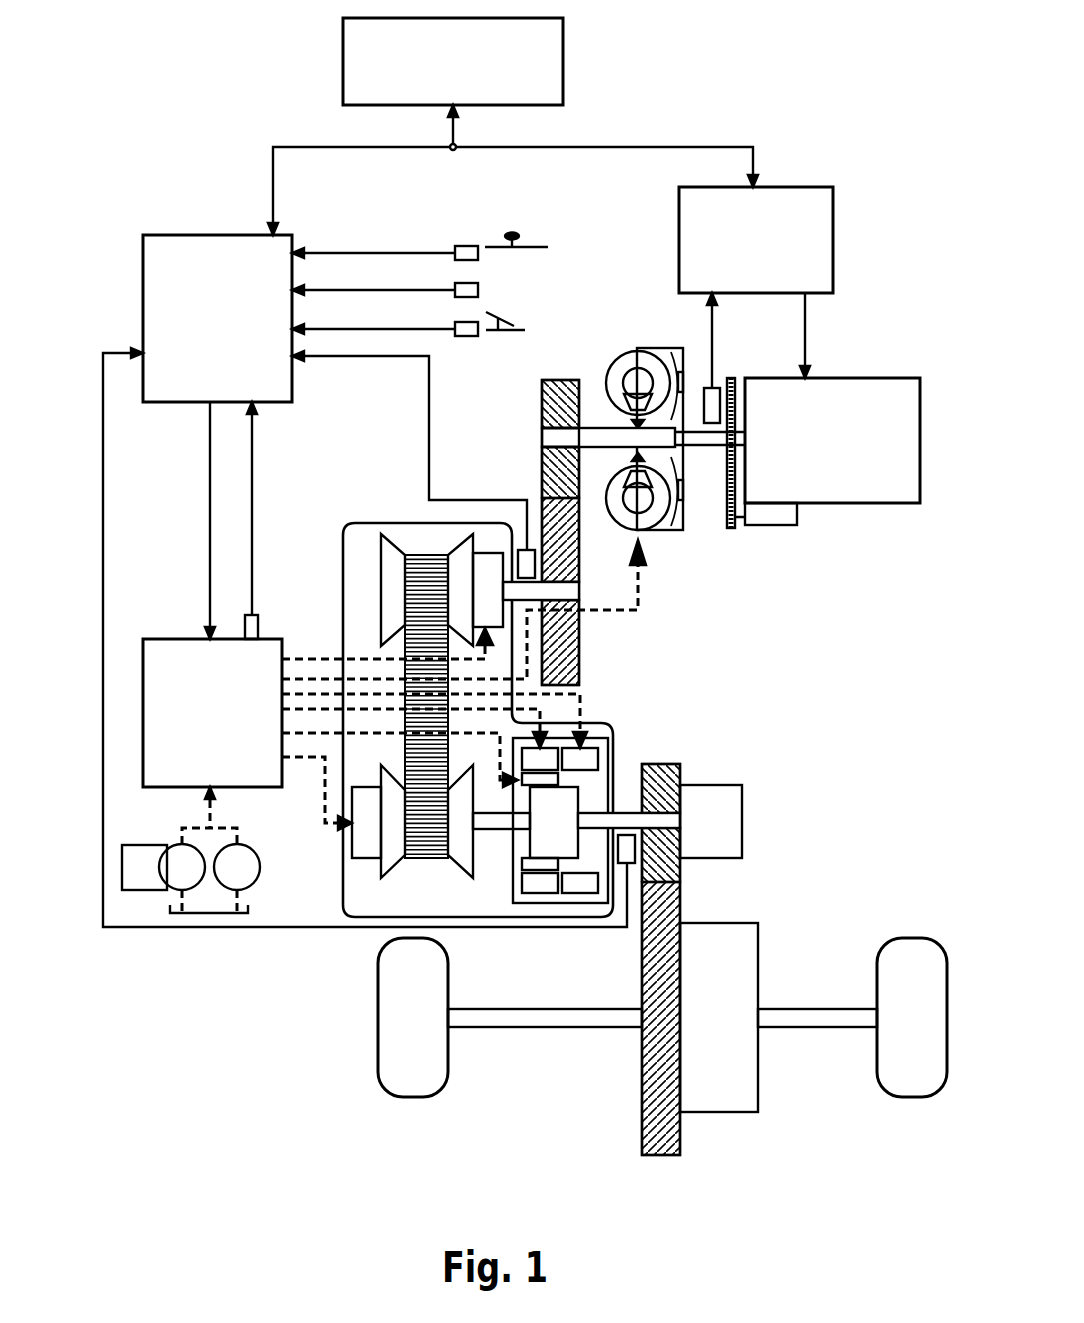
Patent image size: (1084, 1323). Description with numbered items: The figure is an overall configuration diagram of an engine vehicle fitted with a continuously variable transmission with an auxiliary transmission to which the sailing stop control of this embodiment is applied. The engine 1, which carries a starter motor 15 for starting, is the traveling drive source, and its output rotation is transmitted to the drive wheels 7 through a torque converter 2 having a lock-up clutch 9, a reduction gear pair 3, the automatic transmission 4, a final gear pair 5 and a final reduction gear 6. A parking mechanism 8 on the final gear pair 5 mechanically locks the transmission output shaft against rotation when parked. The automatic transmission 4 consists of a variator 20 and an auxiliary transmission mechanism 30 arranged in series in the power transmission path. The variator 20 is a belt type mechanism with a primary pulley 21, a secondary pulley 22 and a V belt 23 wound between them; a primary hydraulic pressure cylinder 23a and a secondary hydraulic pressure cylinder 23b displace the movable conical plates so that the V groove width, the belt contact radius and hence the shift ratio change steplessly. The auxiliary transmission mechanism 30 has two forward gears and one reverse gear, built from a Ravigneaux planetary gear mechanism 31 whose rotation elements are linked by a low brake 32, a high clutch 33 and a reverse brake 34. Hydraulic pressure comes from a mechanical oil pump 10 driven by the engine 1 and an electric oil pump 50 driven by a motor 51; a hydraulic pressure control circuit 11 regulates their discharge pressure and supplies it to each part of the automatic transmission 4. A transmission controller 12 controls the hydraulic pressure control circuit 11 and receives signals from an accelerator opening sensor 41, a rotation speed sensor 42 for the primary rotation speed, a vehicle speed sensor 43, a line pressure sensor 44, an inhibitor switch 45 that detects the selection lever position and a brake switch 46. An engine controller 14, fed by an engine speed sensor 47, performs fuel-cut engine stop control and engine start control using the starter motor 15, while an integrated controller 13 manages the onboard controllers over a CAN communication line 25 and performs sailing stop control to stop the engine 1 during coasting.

The engine 1 is at (908, 393).
The torque converter 2 is at (638, 344).
The reduction gear pair 3 is at (565, 378).
The automatic transmission 4 is at (378, 520).
The final gear pair 5 is at (660, 1160).
The final reduction gear 6 is at (730, 1112).
The drive wheels 7 is at (413, 1097).
The parking mechanism 8 is at (725, 804).
The lock-up clutch 9 is at (684, 485).
The mechanical oil pump 10 is at (246, 846).
The hydraulic pressure control circuit 11 is at (162, 650).
The transmission controller 12 is at (218, 245).
The integrated controller 13 is at (563, 45).
The engine controller 14 is at (802, 187).
The starter motor 15 is at (768, 526).
The variator 20 is at (421, 677).
The primary pulley 21 is at (395, 588).
The secondary pulley 22 is at (393, 845).
The V belt 23 is at (422, 558).
The primary hydraulic pressure cylinder 23a is at (488, 563).
The secondary hydraulic pressure cylinder 23b is at (366, 829).
The CAN communication line 25 is at (580, 147).
The auxiliary transmission mechanism 30 is at (601, 769).
The Ravigneaux planetary gear mechanism 31 is at (560, 838).
The low brake 32 is at (547, 752).
The high clutch 33 is at (527, 863).
The reverse brake 34 is at (587, 752).
The accelerator opening sensor 41 is at (466, 336).
The rotation speed sensor 42 is at (523, 556).
The vehicle speed sensor 43 is at (635, 849).
The line pressure sensor 44 is at (259, 622).
The inhibitor switch 45 is at (466, 246).
The brake switch 46 is at (478, 290).
The engine speed sensor 47 is at (706, 390).
The electric oil pump 50 is at (180, 845).
The motor 51 is at (140, 846).